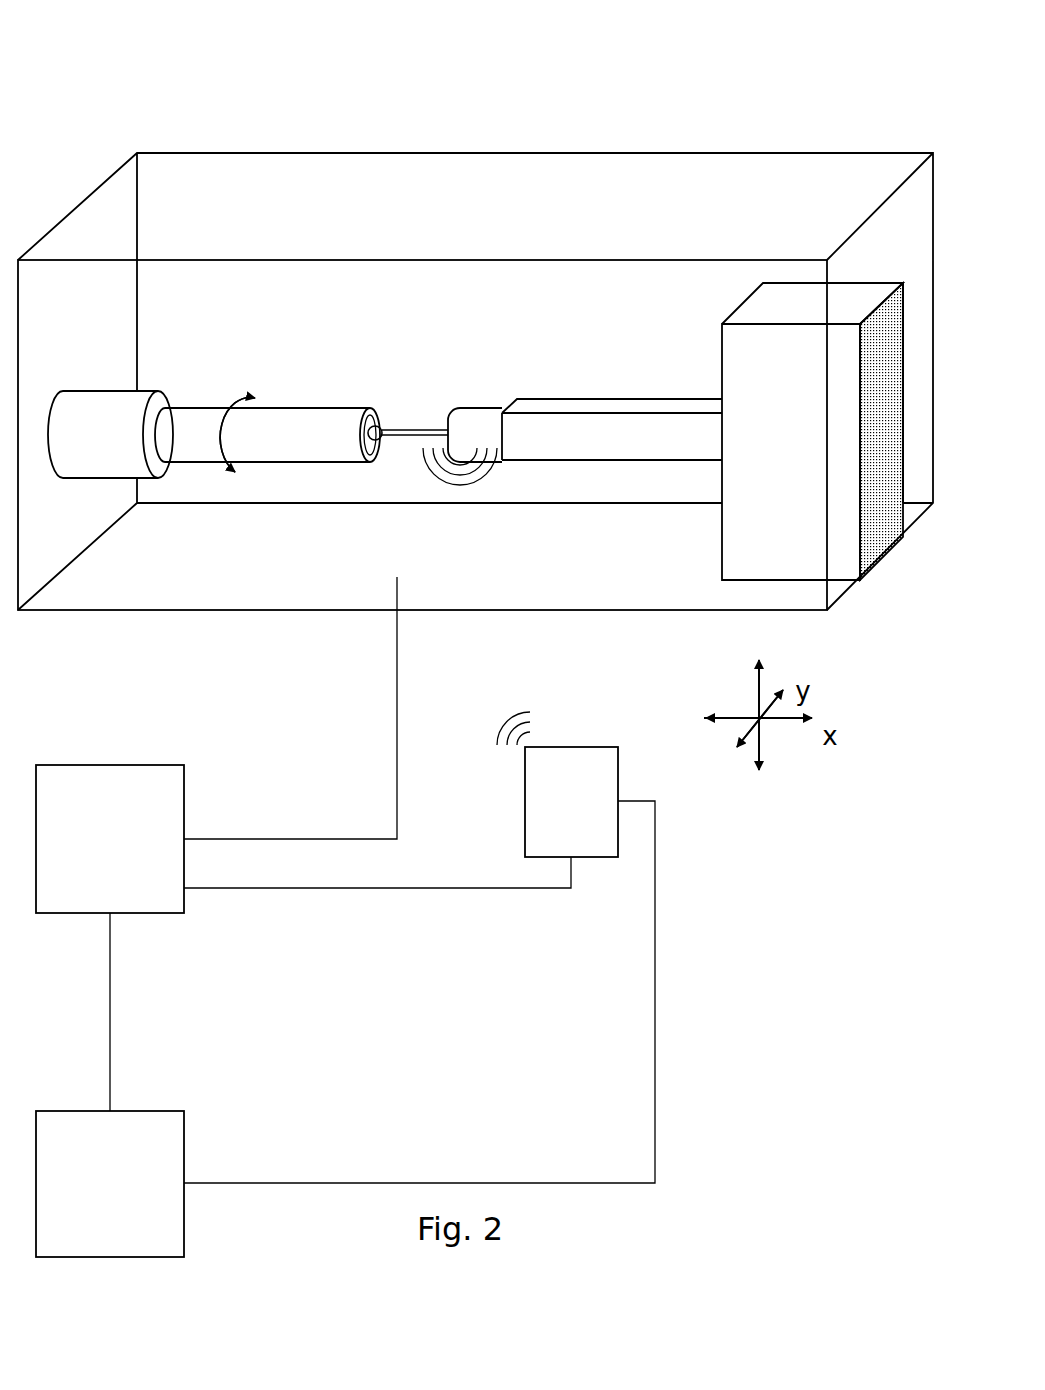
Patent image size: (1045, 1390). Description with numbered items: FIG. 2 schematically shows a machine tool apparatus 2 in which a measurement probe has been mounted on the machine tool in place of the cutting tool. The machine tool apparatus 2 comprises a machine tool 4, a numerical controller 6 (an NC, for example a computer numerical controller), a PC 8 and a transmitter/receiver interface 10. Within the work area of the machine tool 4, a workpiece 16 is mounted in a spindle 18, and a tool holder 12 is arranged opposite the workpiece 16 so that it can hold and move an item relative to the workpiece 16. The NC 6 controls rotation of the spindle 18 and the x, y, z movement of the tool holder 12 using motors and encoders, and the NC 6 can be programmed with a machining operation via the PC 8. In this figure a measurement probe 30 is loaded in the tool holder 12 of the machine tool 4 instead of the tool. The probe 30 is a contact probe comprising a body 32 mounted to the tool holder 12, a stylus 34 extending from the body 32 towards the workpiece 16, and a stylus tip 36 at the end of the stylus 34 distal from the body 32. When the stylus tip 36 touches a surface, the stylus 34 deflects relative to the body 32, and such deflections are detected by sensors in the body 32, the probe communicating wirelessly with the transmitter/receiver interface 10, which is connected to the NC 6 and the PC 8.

The machine tool apparatus 2 is at (74, 112).
The machine tool 4 is at (642, 146).
The numerical controller 6 is at (156, 752).
The PC 8 is at (185, 1155).
The transmitter/receiver interface 10 is at (557, 784).
The tool holder 12 is at (612, 429).
The workpiece 16 is at (267, 434).
The spindle 18 is at (110, 434).
The measurement probe 30 is at (503, 380).
The body 32 is at (488, 450).
The stylus 34 is at (410, 438).
The stylus tip 36 is at (383, 426).